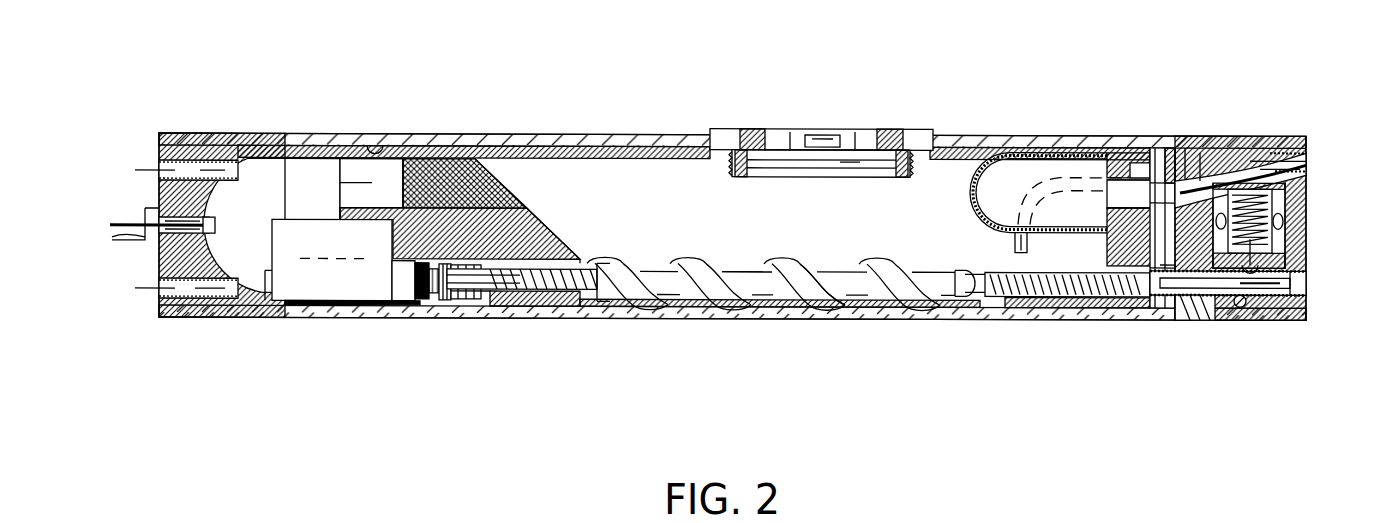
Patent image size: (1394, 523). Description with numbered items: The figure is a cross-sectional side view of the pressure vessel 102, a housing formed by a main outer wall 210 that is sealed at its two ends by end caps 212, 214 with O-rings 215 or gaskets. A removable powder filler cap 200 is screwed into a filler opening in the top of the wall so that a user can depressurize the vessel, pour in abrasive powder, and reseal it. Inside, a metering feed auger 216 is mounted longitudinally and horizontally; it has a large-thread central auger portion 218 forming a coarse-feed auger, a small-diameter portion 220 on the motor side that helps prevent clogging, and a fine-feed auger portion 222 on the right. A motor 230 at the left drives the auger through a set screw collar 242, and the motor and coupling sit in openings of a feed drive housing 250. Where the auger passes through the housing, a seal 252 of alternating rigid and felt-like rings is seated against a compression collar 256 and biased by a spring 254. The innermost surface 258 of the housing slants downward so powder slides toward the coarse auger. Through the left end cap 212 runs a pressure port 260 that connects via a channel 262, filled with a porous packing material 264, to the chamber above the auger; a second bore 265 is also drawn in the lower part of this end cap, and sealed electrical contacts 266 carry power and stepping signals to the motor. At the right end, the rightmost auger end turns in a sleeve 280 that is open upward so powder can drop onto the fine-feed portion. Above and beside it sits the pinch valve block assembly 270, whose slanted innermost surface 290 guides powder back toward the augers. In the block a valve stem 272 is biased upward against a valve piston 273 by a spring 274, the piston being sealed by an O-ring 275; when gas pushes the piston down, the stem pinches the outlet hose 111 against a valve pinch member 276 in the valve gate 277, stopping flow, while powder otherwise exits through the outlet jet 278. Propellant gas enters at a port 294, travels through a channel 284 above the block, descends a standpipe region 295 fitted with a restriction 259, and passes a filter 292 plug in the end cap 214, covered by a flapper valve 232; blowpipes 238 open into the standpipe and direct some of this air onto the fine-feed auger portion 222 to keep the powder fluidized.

The pressure vessel 102 is at (314, 128).
The outlet hose 111 is at (1310, 300).
The powder filler cap 200 is at (774, 124).
The main outer wall 210 is at (654, 134).
The end cap 212 is at (193, 128).
The end cap/outlet assembly 214 is at (1306, 207).
The O-rings 215 is at (1138, 137).
The metering feed auger 216 is at (714, 305).
The central auger portion 218 is at (822, 300).
The small-diameter auger portion 220 is at (540, 318).
The fine-feed auger portion 222 is at (800, 246).
The motor 230 is at (283, 290).
The flapper valve 232 is at (1162, 137).
The blowpipes 238 is at (1012, 240).
The set screw collar 242 is at (427, 318).
The feed drive housing 250 is at (550, 198).
The seal 252 is at (470, 318).
The spring 254 is at (440, 318).
The compression collar 256 is at (540, 215).
The innermost surface 258 is at (548, 240).
The restriction 259 is at (1095, 215).
The pressure port 260 is at (160, 160).
The channel 262 is at (378, 140).
The porous packing material 264 is at (490, 155).
The lower bore 265 is at (160, 283).
The electrical contacts 266 is at (125, 215).
The pinch valve block assembly 270 is at (1271, 342).
The valve stem 272 is at (1306, 262).
The valve piston 273 is at (1295, 137).
The spring 274 is at (1306, 228).
The O-ring 275 is at (1233, 137).
The valve pinch member 276 is at (1240, 325).
The valve gate 277 is at (1285, 325).
The outlet jet 278 is at (1215, 325).
The sleeve 280 is at (998, 315).
The channel 284 is at (1278, 137).
The innermost surface 290 is at (1110, 187).
The filter 292 is at (1062, 255).
The port 294 is at (1306, 162).
The standpipe region 295 is at (1195, 137).